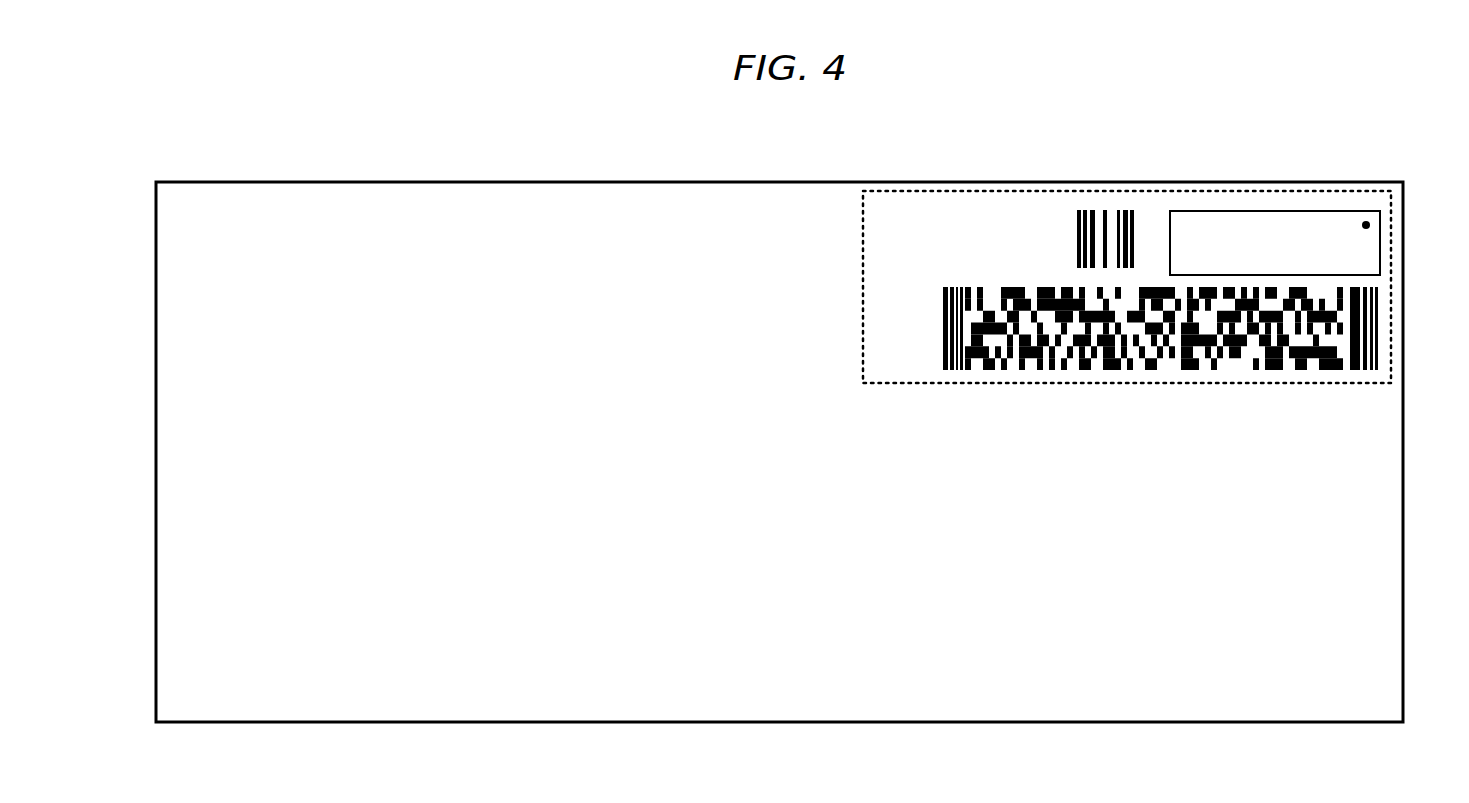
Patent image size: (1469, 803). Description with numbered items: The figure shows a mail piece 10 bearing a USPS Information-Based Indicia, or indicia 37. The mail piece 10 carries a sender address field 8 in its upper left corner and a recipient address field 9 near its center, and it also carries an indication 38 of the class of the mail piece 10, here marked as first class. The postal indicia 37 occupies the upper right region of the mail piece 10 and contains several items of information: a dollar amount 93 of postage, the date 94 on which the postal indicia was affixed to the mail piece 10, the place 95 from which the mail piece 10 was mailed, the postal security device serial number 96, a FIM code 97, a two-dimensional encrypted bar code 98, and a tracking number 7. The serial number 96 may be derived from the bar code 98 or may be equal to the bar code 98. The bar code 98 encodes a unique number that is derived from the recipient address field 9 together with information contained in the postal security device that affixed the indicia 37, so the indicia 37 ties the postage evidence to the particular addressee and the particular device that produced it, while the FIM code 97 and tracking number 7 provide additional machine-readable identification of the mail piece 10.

The tracking number 7 is at (884, 200).
The sender address field 8 is at (301, 218).
The recipient address field 9 is at (637, 564).
The mail piece 10 is at (297, 704).
The indicia 37 is at (1210, 190).
The indication of class 38 is at (958, 205).
The dollar amount 93 is at (1366, 221).
The date 94 is at (1286, 231).
The place 95 is at (1360, 250).
The postal security device serial number 96 is at (1350, 265).
The FIM code 97 is at (1077, 226).
The 2D encrypted bar code 98 is at (1378, 342).